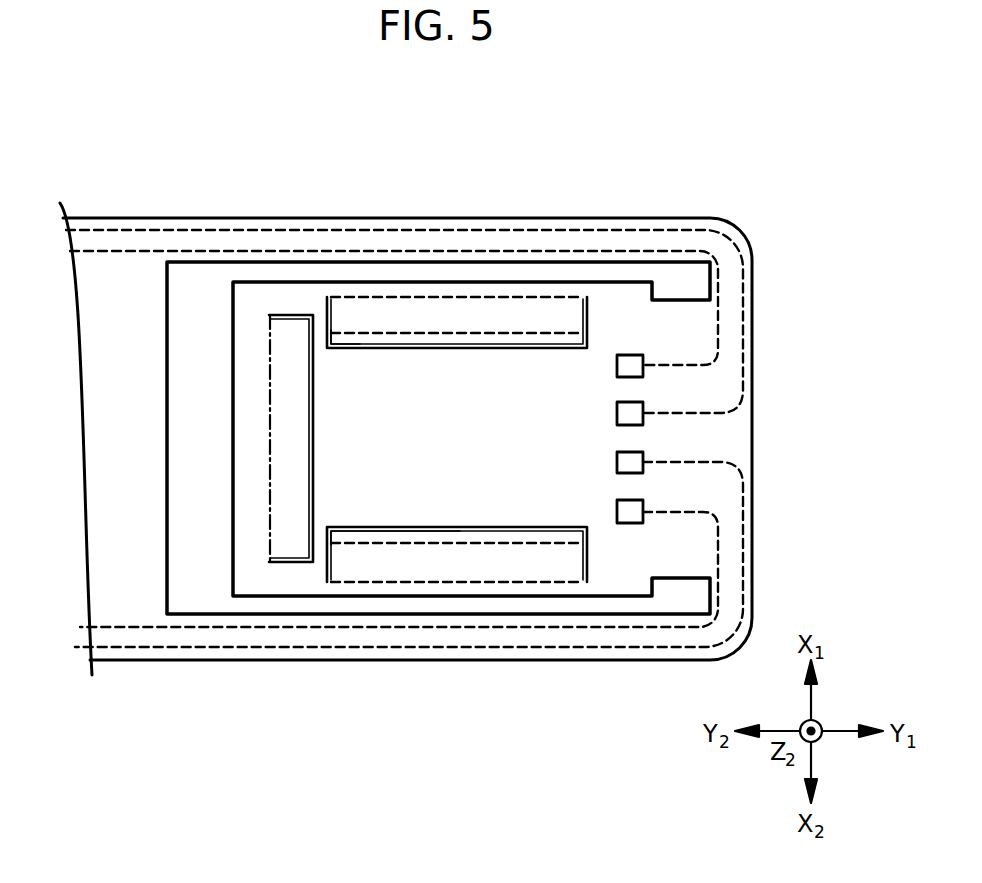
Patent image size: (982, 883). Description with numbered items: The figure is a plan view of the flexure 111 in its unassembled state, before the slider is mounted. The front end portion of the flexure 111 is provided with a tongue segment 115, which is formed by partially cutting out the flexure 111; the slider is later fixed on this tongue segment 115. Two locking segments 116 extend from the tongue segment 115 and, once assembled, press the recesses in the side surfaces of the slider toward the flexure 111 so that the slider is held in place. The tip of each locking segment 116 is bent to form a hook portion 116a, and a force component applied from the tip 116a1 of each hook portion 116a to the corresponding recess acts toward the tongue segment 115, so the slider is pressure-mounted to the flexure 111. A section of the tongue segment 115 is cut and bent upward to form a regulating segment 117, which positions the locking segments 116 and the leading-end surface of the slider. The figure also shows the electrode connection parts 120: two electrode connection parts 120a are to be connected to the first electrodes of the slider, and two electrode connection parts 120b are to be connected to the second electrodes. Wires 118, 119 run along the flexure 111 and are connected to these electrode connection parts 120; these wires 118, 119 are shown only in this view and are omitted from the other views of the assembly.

The flexure 111 is at (386, 186).
The tongue segment 115 is at (582, 385).
The locking segment 116 is at (439, 424).
The hook portion 116a is at (432, 341).
The tip of hook portion 116a1 is at (358, 355).
The regulating segment 117 is at (288, 368).
The wire 118 is at (745, 270).
The wire 119 is at (720, 299).
The electrode connection parts 120 is at (759, 419).
The electrode connection part 120a is at (628, 364).
The electrode connection part 120b is at (628, 411).